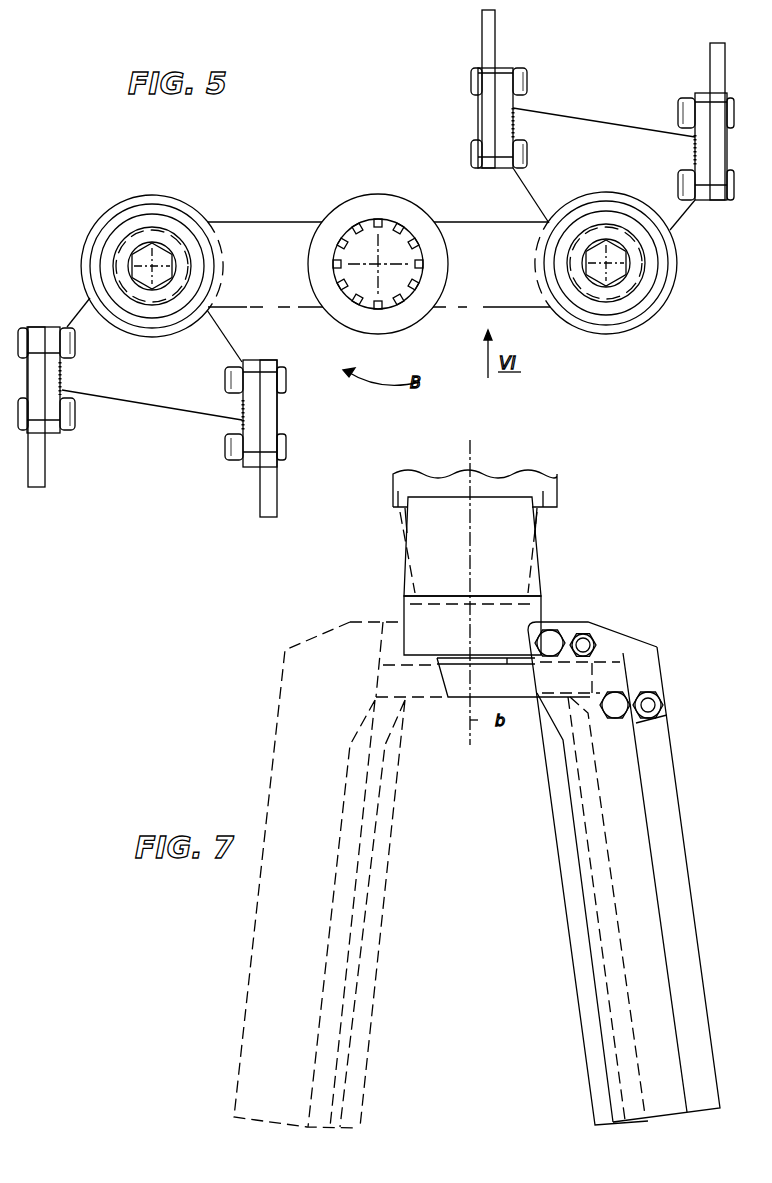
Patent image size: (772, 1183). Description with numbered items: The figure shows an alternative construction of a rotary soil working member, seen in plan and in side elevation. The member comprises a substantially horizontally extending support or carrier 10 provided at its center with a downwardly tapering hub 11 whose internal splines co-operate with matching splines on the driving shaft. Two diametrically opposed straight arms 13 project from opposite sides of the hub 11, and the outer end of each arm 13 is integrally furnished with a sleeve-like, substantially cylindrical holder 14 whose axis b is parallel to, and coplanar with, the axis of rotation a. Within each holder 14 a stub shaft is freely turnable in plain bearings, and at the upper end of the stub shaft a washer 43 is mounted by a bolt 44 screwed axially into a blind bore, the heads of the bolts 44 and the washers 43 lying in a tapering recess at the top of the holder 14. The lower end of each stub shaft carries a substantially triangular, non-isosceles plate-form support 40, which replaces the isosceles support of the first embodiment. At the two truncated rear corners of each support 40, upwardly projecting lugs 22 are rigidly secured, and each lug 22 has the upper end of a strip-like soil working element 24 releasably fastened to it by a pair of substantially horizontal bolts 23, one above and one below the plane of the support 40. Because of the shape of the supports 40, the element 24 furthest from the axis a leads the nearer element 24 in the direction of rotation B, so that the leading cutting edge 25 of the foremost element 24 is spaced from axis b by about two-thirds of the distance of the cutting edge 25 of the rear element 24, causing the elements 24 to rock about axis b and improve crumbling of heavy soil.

In FIG. 5, the support or carrier 10 is at (304, 222).
In FIG. 5, the hub 11 is at (418, 213).
In FIG. 7, the hub 11 is at (401, 518).
In FIG. 5, the arm 13 is at (300, 309).
In FIG. 5, the holder 14 is at (82, 276).
In FIG. 7, the holder 14 is at (540, 562).
In FIG. 5, the lug 22 is at (512, 66).
In FIG. 5, the bolt 23 is at (475, 143).
In FIG. 7, the bolt 23 is at (604, 703).
In FIG. 5, the soil working element 24 is at (482, 23).
In FIG. 7, the soil working element 24 is at (275, 737).
In FIG. 7, the leading cutting edge 25 is at (355, 893).
In FIG. 5, the support 40 is at (622, 125).
In FIG. 7, the support 40 is at (462, 696).
In FIG. 5, the washer 43 is at (117, 258).
In FIG. 5, the bolt 44 is at (140, 253).